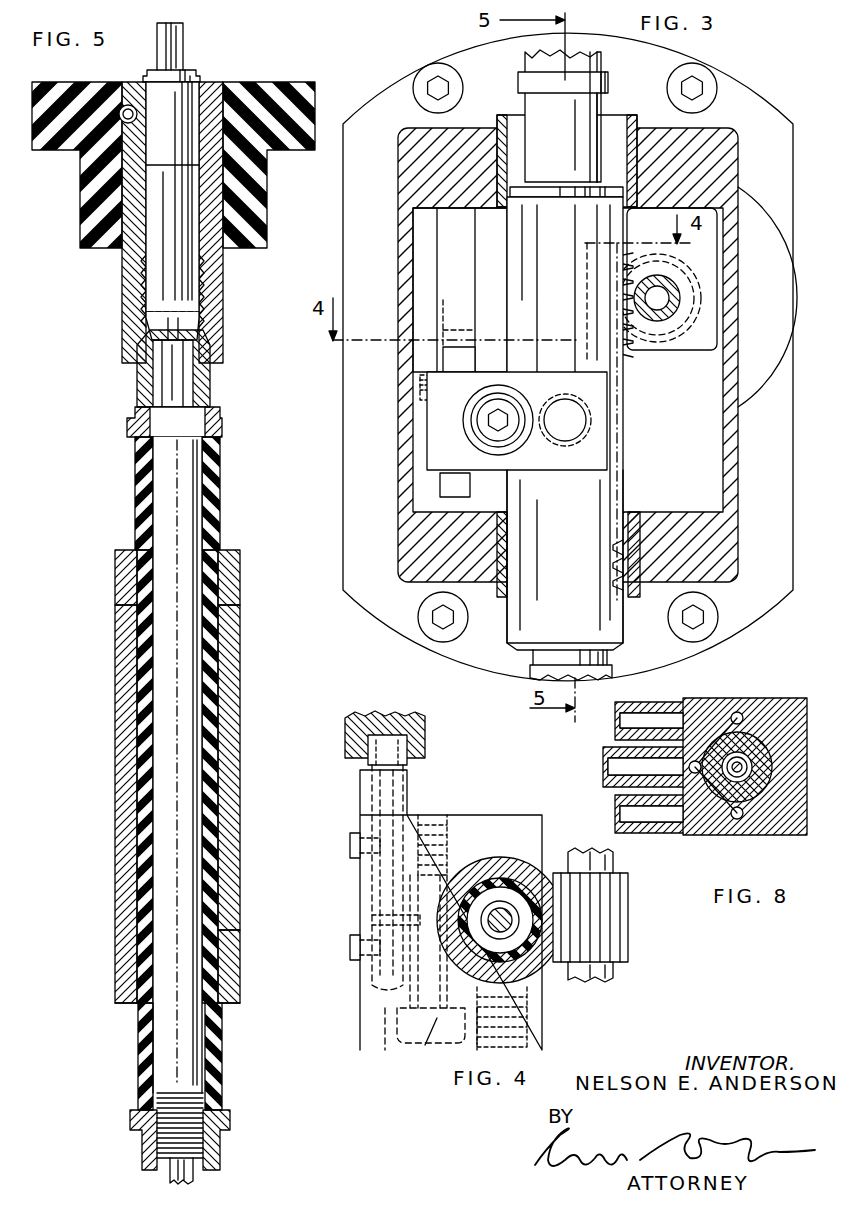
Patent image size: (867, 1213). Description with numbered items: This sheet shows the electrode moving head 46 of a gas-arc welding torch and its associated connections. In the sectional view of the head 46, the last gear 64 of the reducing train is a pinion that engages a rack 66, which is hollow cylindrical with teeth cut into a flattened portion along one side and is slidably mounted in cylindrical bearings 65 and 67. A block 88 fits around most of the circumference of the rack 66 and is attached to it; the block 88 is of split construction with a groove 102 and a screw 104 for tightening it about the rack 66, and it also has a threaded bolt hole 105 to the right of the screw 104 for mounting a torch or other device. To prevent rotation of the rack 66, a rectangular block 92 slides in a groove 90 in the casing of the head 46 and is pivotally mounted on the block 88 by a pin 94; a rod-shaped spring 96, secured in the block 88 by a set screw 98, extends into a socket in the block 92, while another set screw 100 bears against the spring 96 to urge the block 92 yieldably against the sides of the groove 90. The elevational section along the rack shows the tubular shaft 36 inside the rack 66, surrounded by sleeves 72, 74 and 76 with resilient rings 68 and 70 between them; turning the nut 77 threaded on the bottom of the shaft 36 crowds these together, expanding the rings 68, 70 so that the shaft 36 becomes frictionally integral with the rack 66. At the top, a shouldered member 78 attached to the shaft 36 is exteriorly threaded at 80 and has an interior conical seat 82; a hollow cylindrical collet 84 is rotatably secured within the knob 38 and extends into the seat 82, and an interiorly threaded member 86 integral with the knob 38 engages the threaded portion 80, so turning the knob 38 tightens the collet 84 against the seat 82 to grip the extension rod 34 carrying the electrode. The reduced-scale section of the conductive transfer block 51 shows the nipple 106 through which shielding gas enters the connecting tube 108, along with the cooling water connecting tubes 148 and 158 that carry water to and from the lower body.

In FIG. 5, the extension rod 34 is at (186, 46).
In FIG. 5, the shaft 36 is at (160, 705).
In FIG. 4, the shaft 36 is at (545, 985).
In FIG. 5, the knob 38 is at (256, 94).
In FIG. 3, the electrode moving head 46 is at (728, 95).
In FIG. 8, the conductive transfer block 51 is at (780, 822).
In FIG. 3, the gear 64 is at (638, 342).
In FIG. 4, the gear 64 is at (628, 913).
In FIG. 3, the cylindrical bearing 65 is at (614, 125).
In FIG. 5, the rack 66 is at (242, 980).
In FIG. 3, the rack 66 is at (568, 500).
In FIG. 4, the rack 66 is at (530, 882).
In FIG. 3, the cylindrical bearing 67 is at (630, 508).
In FIG. 5, the resilient ring 68 is at (236, 598).
In FIG. 5, the resilient ring 70 is at (226, 958).
In FIG. 5, the sleeve 72 is at (222, 490).
In FIG. 5, the sleeve 74 is at (220, 690).
In FIG. 5, the sleeve 76 is at (222, 1050).
In FIG. 5, the nut 77 is at (210, 1163).
In FIG. 5, the shouldered member 78 is at (210, 397).
In FIG. 5, the exteriorly threaded portion 80 is at (140, 368).
In FIG. 5, the interior conical seat 82 is at (128, 352).
In FIG. 5, the hollow cylindrical collet 84 is at (196, 286).
In FIG. 5, the interiorly threaded member 86 is at (124, 300).
In FIG. 3, the block 88 is at (522, 368).
In FIG. 4, the block 88 is at (500, 830).
In FIG. 3, the groove 90 is at (460, 270).
In FIG. 4, the groove 90 is at (400, 725).
In FIG. 3, the rectangular block 92 is at (455, 348).
In FIG. 4, the rectangular block 92 is at (405, 758).
In FIG. 3, the pin 94 is at (440, 455).
In FIG. 3, the rod-shaped spring 96 is at (468, 372).
In FIG. 4, the rod-shaped spring 96 is at (378, 783).
In FIG. 4, the set screw 98 is at (356, 950).
In FIG. 4, the set screw 100 is at (350, 846).
In FIG. 4, the groove 102 is at (368, 918).
In FIG. 3, the screw 104 is at (508, 410).
In FIG. 4, the screw 104 is at (410, 1060).
In FIG. 3, the threaded bolt hole 105 is at (583, 421).
In FIG. 4, the threaded bolt hole 105 is at (545, 1030).
In FIG. 8, the nipple 106 is at (604, 765).
In FIG. 8, the connecting tube 108 is at (694, 775).
In FIG. 8, the connecting tube 148 is at (738, 820).
In FIG. 8, the connecting tube 158 is at (738, 712).